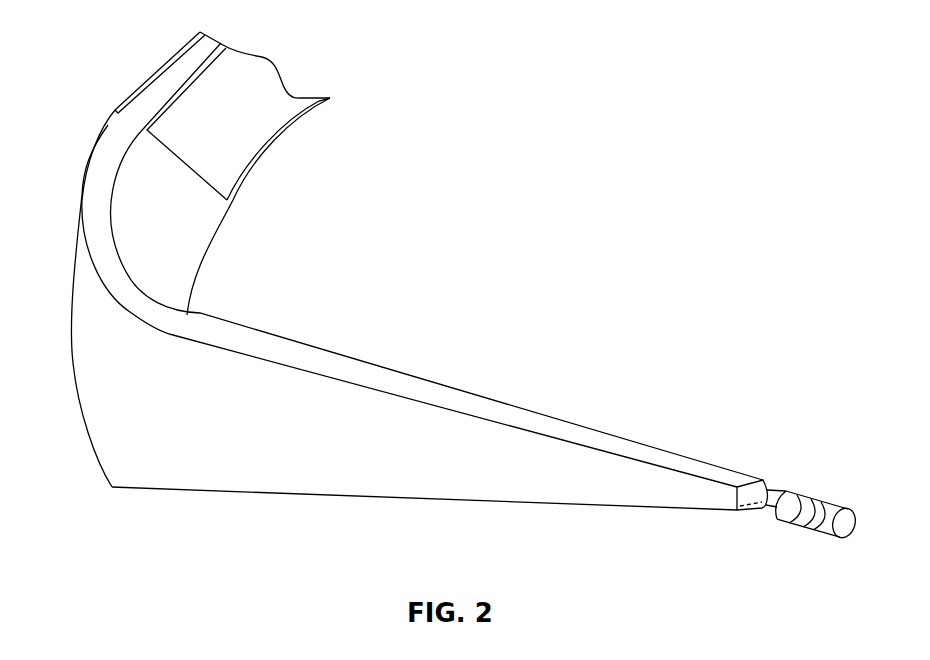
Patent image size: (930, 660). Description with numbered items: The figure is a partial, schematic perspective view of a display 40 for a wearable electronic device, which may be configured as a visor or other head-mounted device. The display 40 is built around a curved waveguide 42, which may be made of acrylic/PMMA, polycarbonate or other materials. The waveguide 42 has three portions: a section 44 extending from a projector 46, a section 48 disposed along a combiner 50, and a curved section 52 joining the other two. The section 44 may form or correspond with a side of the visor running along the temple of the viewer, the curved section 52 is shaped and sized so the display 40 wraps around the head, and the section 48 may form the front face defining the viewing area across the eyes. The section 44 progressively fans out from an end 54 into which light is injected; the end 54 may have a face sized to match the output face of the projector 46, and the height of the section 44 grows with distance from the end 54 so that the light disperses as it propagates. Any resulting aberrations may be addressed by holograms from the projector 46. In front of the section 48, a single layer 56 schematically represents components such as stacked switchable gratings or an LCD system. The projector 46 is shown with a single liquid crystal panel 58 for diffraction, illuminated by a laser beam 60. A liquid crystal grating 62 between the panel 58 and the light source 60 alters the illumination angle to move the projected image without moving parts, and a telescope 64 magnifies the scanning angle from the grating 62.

The display 40 is at (466, 102).
The curved waveguide 42 is at (187, 490).
The section 44 is at (517, 503).
The projector 46 is at (838, 501).
The section 48 is at (182, 50).
The combiner 50 is at (147, 80).
The curved section 52 is at (97, 264).
The end 54 is at (762, 480).
The layer 56 is at (238, 180).
The liquid crystal panel 58 is at (778, 525).
The laser beam 60 is at (829, 539).
The liquid crystal grating 62 is at (809, 532).
The telescope 64 is at (808, 497).